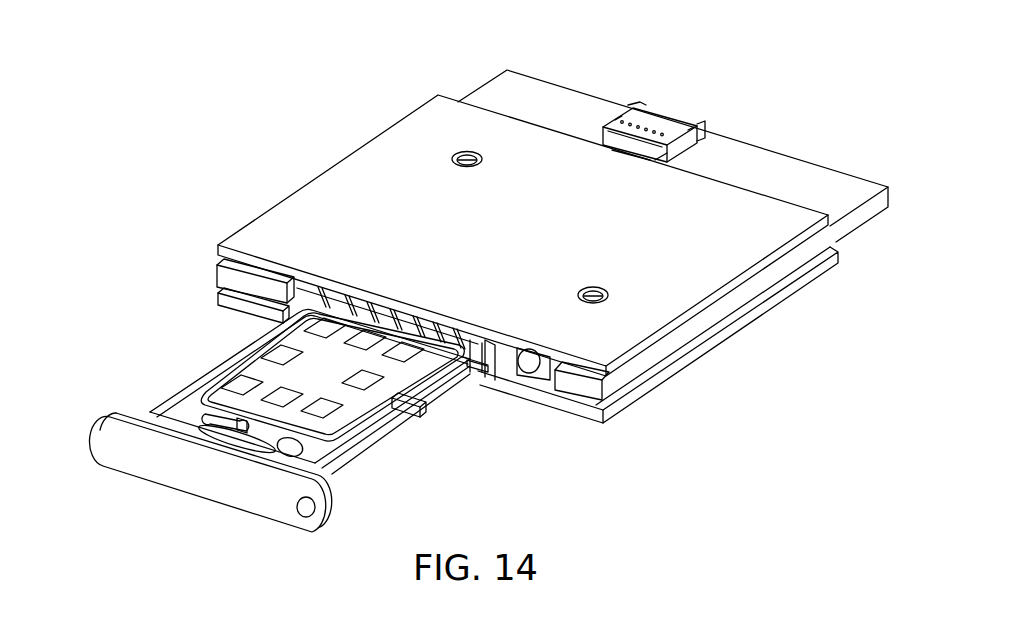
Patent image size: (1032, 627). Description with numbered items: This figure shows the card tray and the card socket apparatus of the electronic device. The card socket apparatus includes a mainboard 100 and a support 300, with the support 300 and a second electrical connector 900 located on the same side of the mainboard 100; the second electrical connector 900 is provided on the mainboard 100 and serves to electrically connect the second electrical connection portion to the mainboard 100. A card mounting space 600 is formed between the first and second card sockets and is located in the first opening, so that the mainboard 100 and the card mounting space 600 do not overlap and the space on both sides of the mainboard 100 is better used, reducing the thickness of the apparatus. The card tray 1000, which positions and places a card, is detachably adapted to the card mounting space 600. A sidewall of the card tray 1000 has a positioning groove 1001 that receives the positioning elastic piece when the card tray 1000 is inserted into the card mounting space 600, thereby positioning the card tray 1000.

The mainboard 100 is at (508, 90).
The support 300 is at (312, 212).
The second electrical connector 900 is at (662, 120).
The card tray 1000 is at (185, 402).
The positioning groove 1001 is at (403, 410).
The card mounting space 600 is at (470, 370).